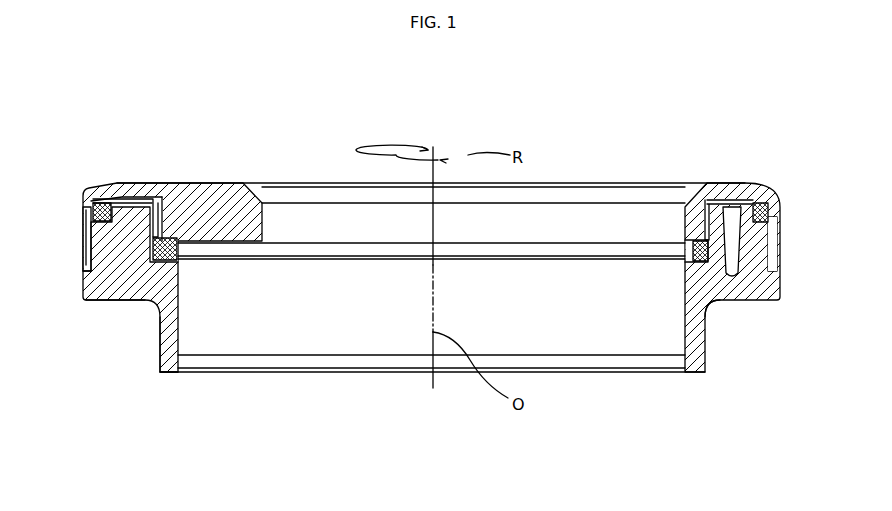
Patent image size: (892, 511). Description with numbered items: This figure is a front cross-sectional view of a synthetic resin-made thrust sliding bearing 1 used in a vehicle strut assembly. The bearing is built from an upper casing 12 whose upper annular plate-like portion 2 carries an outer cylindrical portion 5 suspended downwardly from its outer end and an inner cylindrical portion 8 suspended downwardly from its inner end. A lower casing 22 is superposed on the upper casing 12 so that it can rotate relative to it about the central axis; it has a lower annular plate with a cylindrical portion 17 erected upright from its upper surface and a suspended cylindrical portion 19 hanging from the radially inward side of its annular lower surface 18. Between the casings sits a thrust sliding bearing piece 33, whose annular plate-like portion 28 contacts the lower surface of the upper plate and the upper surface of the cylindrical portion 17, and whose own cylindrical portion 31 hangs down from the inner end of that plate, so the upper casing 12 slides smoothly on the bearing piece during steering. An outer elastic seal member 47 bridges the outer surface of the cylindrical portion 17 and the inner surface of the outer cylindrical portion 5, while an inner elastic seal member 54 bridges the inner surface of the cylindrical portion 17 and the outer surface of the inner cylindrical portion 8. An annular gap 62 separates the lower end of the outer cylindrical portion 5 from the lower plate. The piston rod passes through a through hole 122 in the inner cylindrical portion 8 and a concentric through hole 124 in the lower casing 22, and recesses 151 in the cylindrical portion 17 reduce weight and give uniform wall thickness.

The thrust sliding bearing 1 is at (86, 183).
The upper annular plate-like portion 2 is at (133, 190).
The outer cylindrical portion 5 is at (88, 223).
The inner cylindrical portion 8 is at (170, 222).
The upper casing 12 is at (673, 181).
The cylindrical portion 17 is at (112, 246).
The annular lower surface 18 is at (120, 301).
The suspended cylindrical portion 19 is at (168, 335).
The lower casing 22 is at (733, 301).
The annular plate-like portion 28 is at (140, 200).
The cylindrical portion 31 is at (155, 215).
The thrust sliding bearing piece 33 is at (730, 196).
The outer elastic seal member 47 is at (768, 200).
The inner elastic seal member 54 is at (692, 262).
The annular gap 62 is at (88, 272).
The through hole 122 is at (311, 225).
The through hole 124 is at (304, 333).
The recesses 151 is at (736, 255).